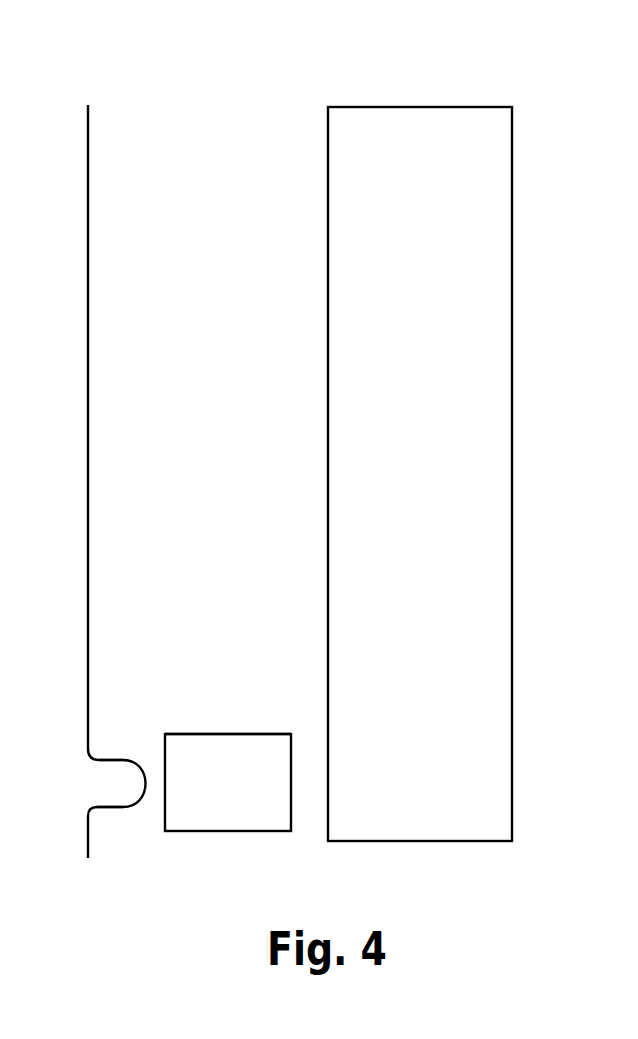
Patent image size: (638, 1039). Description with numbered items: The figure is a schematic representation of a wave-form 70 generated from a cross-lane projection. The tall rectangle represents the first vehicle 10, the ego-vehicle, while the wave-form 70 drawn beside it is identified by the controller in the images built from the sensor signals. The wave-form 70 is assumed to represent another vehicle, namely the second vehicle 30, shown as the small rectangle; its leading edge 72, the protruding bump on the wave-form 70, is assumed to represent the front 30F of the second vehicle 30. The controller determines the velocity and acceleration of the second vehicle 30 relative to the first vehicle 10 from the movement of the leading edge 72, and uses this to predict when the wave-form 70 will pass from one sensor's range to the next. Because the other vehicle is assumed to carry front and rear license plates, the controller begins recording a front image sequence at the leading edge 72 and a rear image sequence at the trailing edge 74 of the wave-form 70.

The first vehicle 10 is at (472, 107).
The second vehicle 30 is at (291, 820).
The front of second vehicle 30F is at (287, 734).
The wave-form 70 is at (88, 548).
The leading edge 72 is at (118, 760).
The trailing edge 74 is at (107, 807).